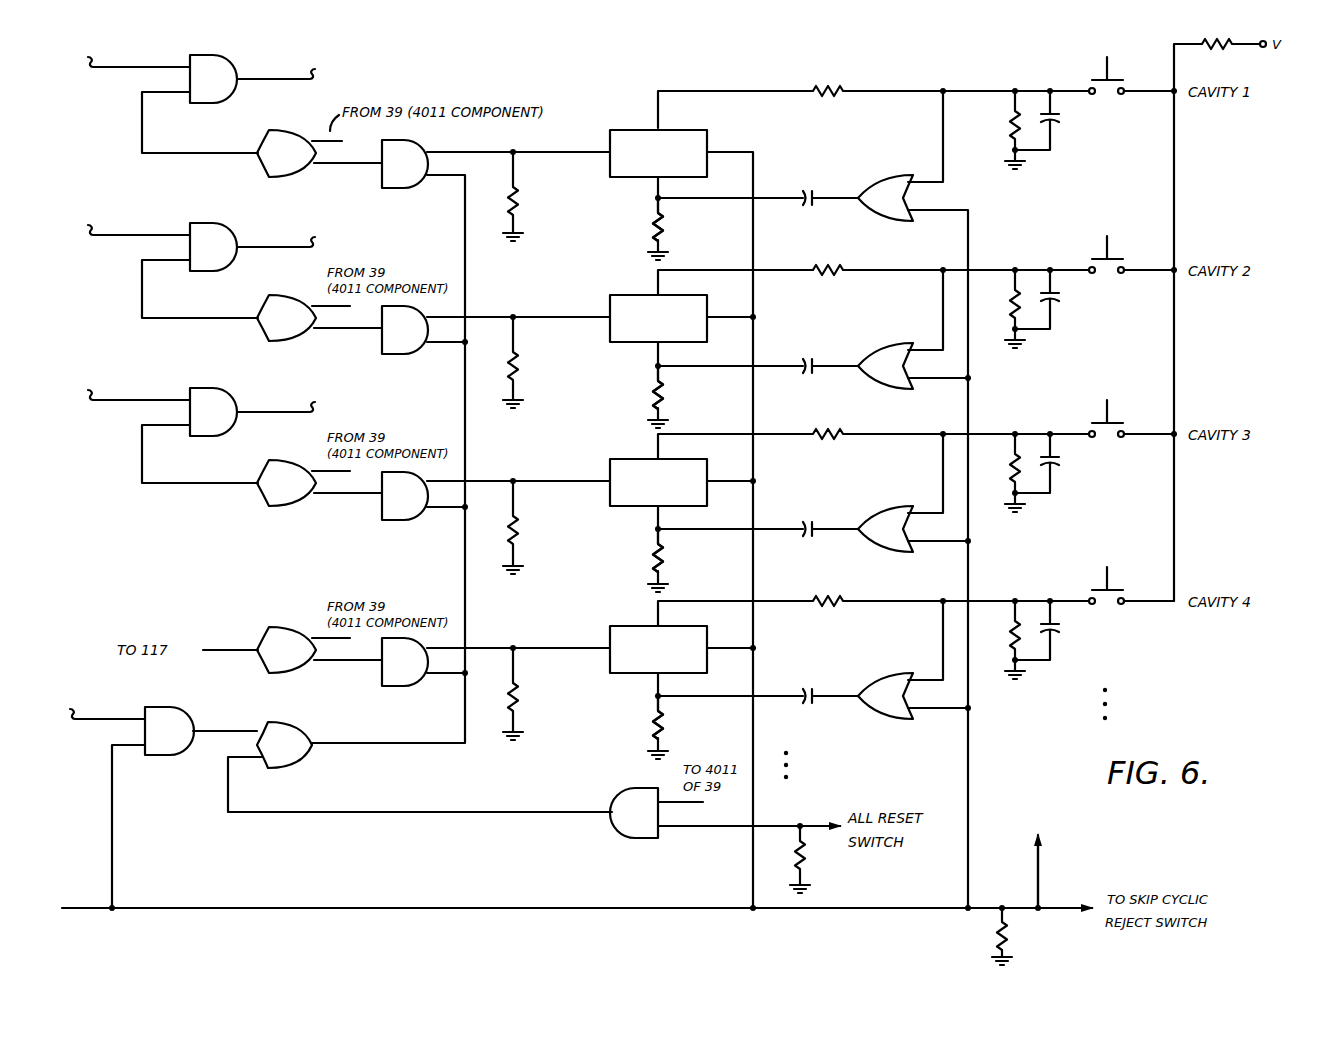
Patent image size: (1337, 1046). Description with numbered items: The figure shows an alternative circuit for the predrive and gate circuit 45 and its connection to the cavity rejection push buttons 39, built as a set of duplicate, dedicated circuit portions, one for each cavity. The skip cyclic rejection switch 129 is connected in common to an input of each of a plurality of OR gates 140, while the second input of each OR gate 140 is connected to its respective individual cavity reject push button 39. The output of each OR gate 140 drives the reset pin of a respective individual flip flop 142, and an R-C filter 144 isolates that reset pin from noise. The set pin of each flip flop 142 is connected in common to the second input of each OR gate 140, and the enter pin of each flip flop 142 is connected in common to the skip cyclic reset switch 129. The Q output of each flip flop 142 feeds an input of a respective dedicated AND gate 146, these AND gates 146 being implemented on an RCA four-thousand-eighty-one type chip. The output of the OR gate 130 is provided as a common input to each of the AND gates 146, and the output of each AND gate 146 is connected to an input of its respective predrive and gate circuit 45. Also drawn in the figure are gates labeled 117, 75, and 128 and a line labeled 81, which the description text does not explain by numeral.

The cavity rejection push button 39 is at (1097, 70).
The predrive and gate circuit 45 is at (296, 178).
The AND gate 75 is at (196, 704).
The all reset switch line 81 is at (804, 816).
The AND gate 117 is at (213, 245).
The AND gate 128 is at (623, 790).
The skip cyclic rejection switch 129 is at (1058, 913).
The OR gate 130 is at (283, 766).
The OR gate 140 is at (885, 447).
The flip flop 142 is at (638, 104).
The R-C filter 144 is at (686, 206).
The AND gate 146 is at (388, 189).